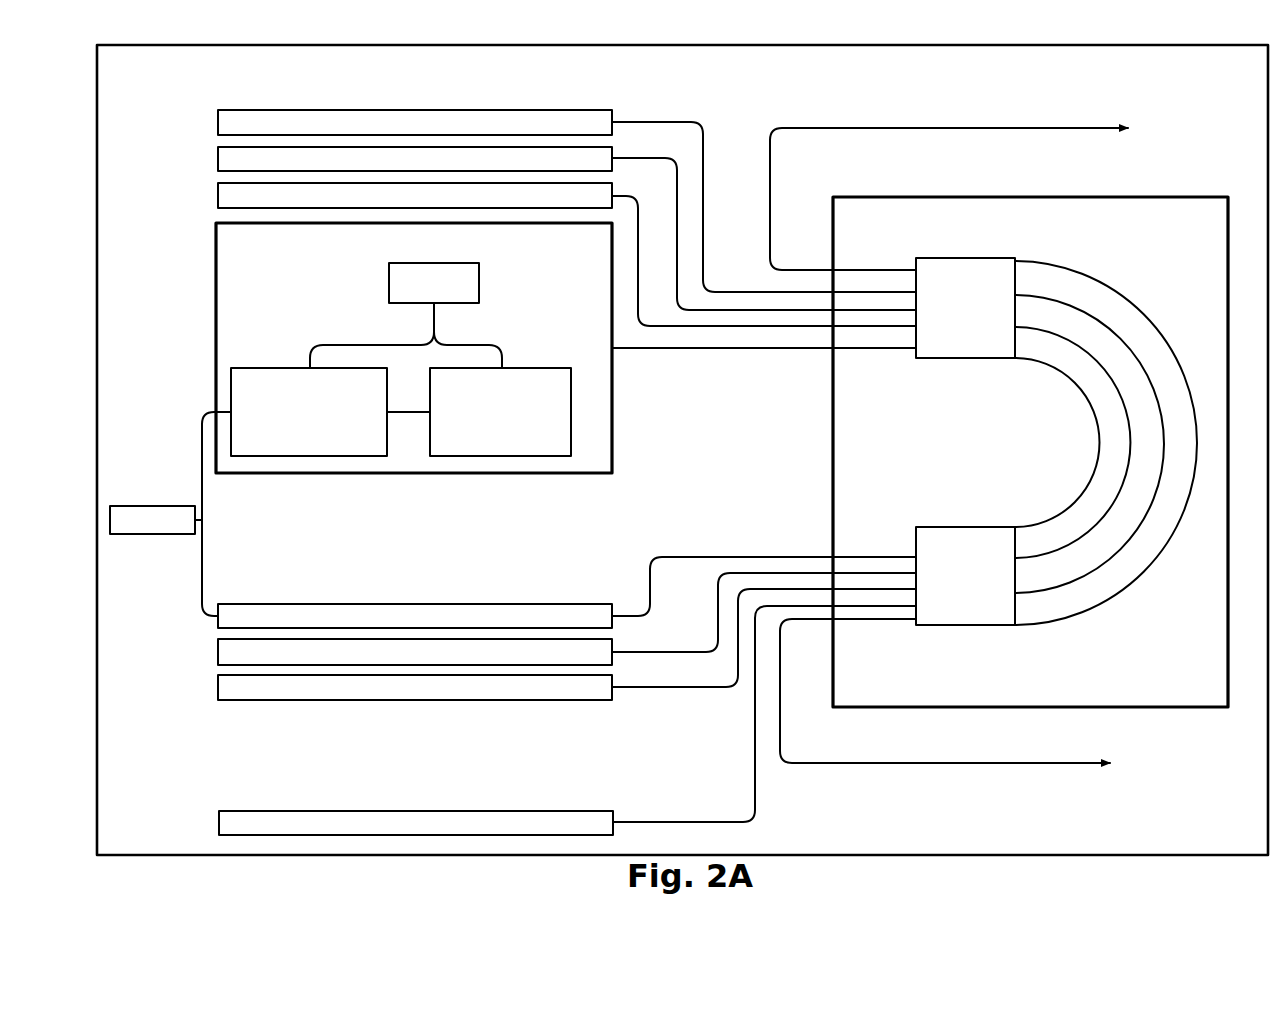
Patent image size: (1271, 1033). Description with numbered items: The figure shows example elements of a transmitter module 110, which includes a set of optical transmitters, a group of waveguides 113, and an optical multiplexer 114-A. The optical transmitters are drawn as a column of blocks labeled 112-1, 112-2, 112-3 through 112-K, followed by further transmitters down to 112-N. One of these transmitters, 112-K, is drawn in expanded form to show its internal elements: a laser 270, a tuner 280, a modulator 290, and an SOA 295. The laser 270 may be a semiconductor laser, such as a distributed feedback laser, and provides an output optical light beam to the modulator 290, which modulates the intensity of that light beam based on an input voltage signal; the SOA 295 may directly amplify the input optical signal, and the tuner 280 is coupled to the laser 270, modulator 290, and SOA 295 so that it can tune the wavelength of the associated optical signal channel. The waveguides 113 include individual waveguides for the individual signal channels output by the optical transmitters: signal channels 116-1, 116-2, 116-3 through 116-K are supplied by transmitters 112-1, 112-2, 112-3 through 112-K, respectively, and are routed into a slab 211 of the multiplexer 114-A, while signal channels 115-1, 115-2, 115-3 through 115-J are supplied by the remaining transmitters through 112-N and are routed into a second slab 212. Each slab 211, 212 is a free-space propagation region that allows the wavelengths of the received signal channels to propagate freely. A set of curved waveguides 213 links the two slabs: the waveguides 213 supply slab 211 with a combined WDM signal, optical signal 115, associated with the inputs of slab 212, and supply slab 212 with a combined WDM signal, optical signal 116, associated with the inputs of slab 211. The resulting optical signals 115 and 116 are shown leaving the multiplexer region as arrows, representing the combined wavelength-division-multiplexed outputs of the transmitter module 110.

The transmitter module 110 is at (193, 78).
The optical transmitter 112-1 is at (218, 122).
The optical transmitter 112-2 is at (218, 159).
The optical transmitter 112-3 is at (218, 195).
The optical transmitter 112-K is at (216, 249).
The optical transmitter 112-N is at (218, 829).
The optical multiplexer 114-A is at (1134, 195).
The optical signal 115 is at (984, 128).
The signal channel 115-1 is at (725, 556).
The signal channel 115-2 is at (675, 654).
The signal channel 115-3 is at (655, 688).
The signal channel 115-J is at (735, 821).
The optical signal 116 is at (940, 764).
The signal channel 116-1 is at (637, 121).
The signal channel 116-2 is at (651, 158).
The signal channel 116-3 is at (638, 213).
The signal channel 116-K is at (678, 348).
The waveguides 113 is at (778, 798).
The slab 211 is at (965, 308).
The slab 212 is at (965, 576).
The waveguides 213 is at (1155, 310).
The laser 270 is at (178, 537).
The tuner 280 is at (480, 283).
The modulator 290 is at (309, 412).
The SOA 295 is at (500, 412).